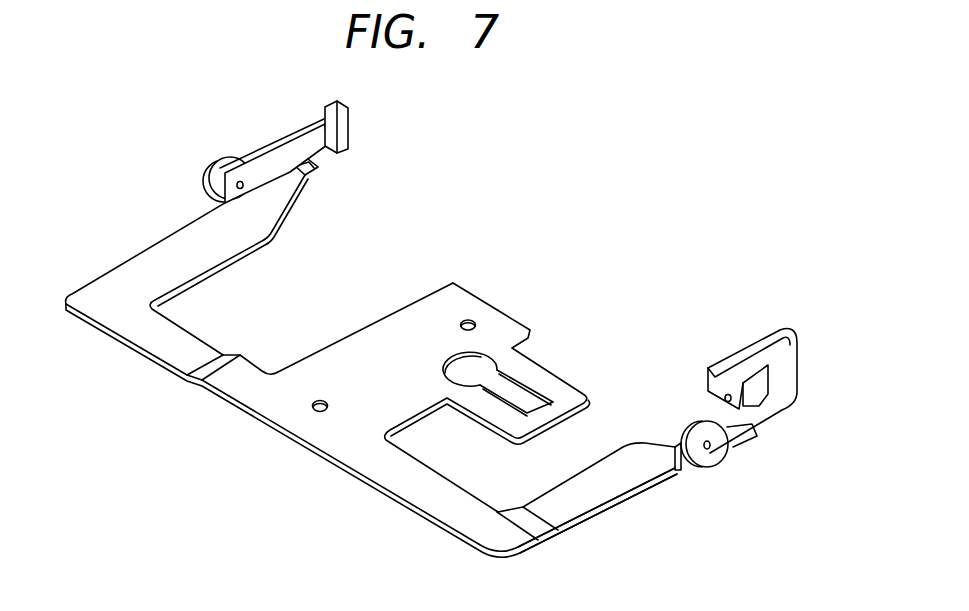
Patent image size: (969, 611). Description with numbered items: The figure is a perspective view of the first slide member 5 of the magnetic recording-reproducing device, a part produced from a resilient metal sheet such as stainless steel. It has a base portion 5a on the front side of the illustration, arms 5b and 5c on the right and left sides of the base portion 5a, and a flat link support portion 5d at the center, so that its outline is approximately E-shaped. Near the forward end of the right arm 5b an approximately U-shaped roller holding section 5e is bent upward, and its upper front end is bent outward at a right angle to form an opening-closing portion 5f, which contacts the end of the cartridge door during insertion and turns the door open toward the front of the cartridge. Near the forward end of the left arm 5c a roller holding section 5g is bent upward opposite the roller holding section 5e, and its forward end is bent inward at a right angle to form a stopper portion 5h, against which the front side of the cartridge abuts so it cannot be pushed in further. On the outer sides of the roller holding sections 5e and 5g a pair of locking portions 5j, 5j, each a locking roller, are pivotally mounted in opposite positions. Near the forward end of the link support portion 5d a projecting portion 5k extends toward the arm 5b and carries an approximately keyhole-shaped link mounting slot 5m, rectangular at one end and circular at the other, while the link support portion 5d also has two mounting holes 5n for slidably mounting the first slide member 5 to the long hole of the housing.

The first slide member 5 is at (419, 531).
The base portion 5a is at (270, 405).
The arm 5b is at (600, 497).
The arm 5c is at (178, 256).
The link support portion 5d is at (410, 343).
The roller holding section 5e is at (782, 392).
The opening-closing portion 5f is at (708, 390).
The roller holding section 5g is at (283, 158).
The stopper portion 5h is at (343, 131).
The locking portion 5j is at (228, 158).
The projecting portion 5k is at (557, 387).
The link mounting slot 5m is at (508, 390).
The mounting hole 5n is at (321, 400).